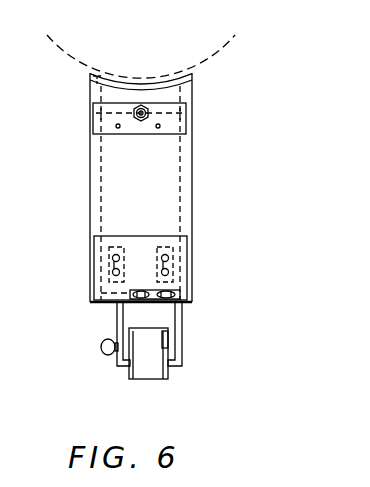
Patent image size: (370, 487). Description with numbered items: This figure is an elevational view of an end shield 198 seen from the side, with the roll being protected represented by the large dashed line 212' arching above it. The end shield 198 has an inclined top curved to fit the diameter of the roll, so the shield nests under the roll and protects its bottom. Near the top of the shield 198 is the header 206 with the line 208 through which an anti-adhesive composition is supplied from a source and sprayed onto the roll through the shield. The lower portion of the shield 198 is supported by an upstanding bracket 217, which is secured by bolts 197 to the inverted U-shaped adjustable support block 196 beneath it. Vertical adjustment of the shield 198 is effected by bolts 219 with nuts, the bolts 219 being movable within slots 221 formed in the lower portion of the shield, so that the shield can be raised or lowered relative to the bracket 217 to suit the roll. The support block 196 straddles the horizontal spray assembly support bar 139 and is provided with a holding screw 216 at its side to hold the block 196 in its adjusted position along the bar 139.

The roll line 212' is at (141, 54).
The end shield 198 is at (192, 206).
The header 206 is at (186, 128).
The line 208 is at (141, 122).
The upstanding bracket 217 is at (141, 236).
The slot 221 is at (110, 250).
The bolt 219 is at (113, 271).
The bolt 197 is at (181, 292).
The adjustable support block 196 is at (183, 323).
The spray assembly support bar 139 is at (157, 368).
The holding screw 216 is at (101, 347).